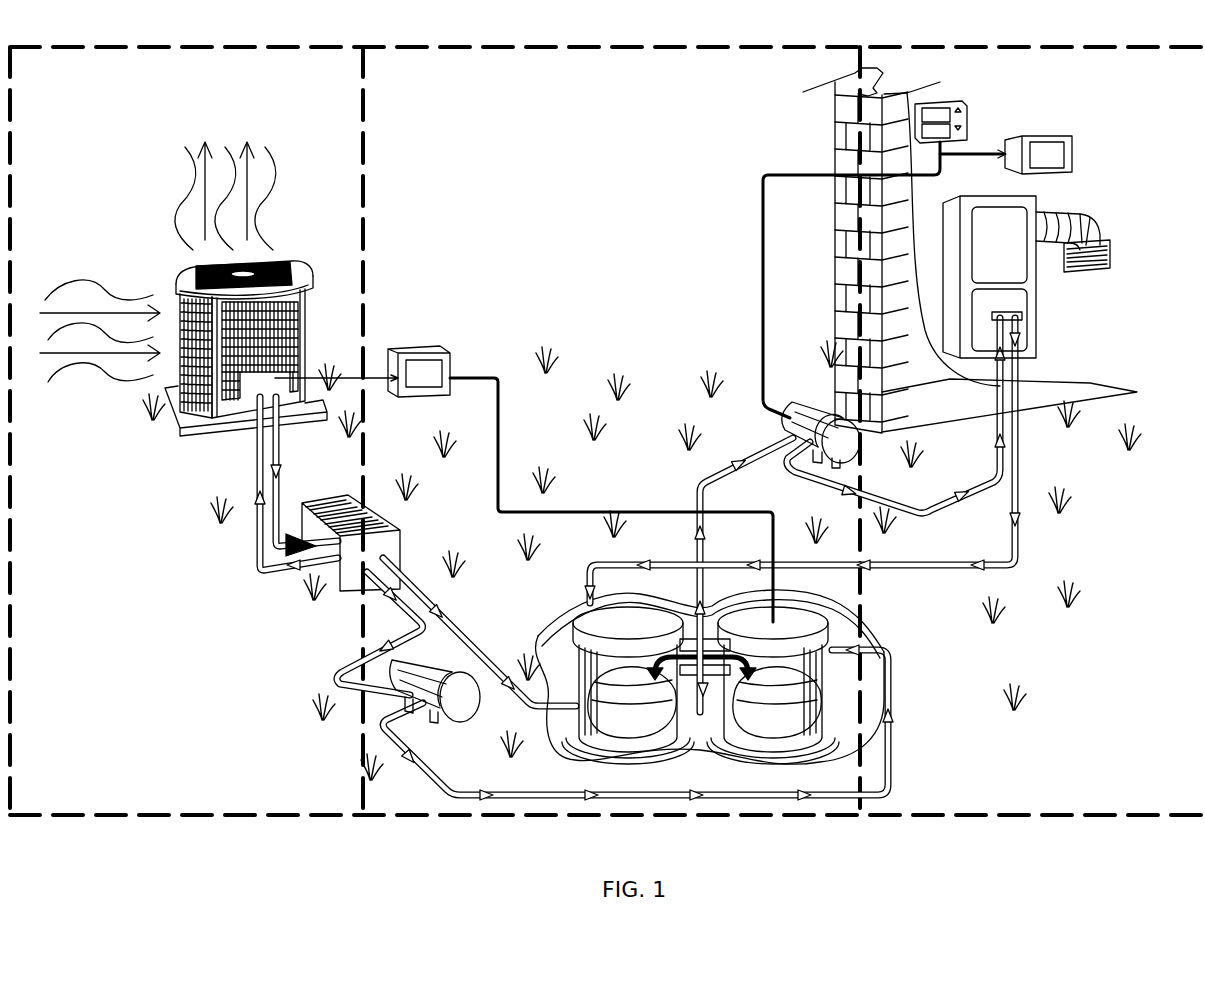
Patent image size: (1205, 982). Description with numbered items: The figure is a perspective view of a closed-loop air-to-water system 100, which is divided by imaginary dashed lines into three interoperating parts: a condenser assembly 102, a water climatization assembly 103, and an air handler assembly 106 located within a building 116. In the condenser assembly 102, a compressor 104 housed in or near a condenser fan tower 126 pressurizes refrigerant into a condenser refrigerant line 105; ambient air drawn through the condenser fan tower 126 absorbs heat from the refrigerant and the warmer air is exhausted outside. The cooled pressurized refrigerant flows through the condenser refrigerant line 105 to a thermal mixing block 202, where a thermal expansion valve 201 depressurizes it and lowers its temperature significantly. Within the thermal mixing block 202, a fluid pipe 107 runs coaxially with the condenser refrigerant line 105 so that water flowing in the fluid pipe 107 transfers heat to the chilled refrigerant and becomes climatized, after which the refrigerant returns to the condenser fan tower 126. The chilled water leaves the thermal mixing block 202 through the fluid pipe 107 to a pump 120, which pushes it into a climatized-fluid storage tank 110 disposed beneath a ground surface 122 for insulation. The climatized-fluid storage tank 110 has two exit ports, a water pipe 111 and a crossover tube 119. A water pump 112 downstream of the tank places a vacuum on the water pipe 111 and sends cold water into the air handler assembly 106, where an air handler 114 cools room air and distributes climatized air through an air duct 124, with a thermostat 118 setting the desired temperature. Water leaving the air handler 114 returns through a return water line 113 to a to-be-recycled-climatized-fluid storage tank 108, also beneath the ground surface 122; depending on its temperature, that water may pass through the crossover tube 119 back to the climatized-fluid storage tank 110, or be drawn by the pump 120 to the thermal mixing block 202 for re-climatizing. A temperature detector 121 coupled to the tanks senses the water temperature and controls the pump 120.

The closed-loop air-to-water system 100 is at (652, 860).
The condenser assembly 102 is at (165, 664).
The water climatization assembly 103 is at (618, 188).
The compressor 104 is at (247, 387).
The condenser refrigerant line 105 is at (262, 565).
The air handler assembly 106 is at (1117, 628).
The fluid pipe 107 is at (335, 676).
The to-be-recycled-climatized-fluid storage tank 108 is at (637, 620).
The climatized-fluid storage tank 110 is at (803, 620).
The water pipe 111 is at (697, 490).
The water pump 112 is at (795, 405).
The return water line 113 is at (1018, 492).
The air handler 114 is at (1005, 272).
The building 116 is at (837, 138).
The thermostat 118 is at (973, 112).
The crossover tube 119 is at (686, 665).
The pump 120 is at (465, 707).
The temperature detector 121 is at (414, 348).
The ground surface 122 is at (568, 599).
The air duct 124 is at (1045, 217).
The condenser fan tower 126 is at (310, 292).
The thermal expansion valve 201 is at (288, 545).
The thermal mixing block 202 is at (335, 570).